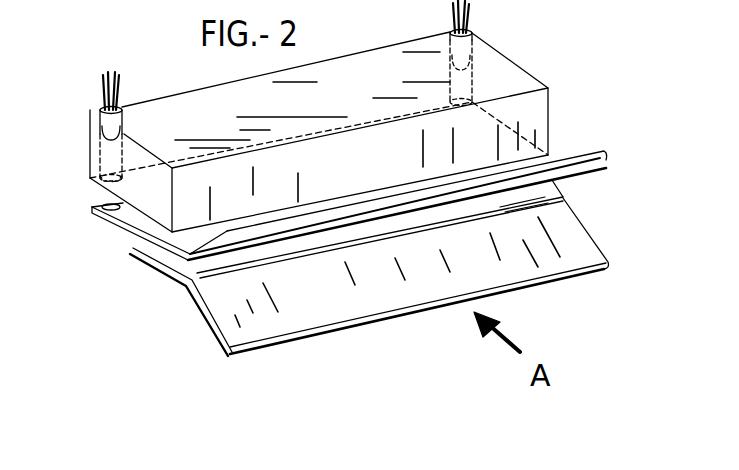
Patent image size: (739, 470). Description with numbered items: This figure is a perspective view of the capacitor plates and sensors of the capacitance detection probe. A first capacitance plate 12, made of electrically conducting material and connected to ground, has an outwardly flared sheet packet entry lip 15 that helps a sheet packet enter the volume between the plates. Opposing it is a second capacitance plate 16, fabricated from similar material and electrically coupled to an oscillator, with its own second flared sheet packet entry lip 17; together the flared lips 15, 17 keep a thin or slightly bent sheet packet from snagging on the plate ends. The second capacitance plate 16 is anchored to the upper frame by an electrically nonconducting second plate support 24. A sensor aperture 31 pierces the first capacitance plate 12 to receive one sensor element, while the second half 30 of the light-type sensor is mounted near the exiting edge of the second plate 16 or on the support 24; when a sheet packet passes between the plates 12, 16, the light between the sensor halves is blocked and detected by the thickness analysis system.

The first capacitance plate 12 is at (158, 262).
The first flared sheet packet entry lip 15 is at (608, 258).
The second capacitance plate 16 is at (130, 236).
The second flared sheet packet entry lip 17 is at (604, 162).
The second plate support 24 is at (552, 92).
The second half of a sensor 30 is at (100, 104).
The sensor aperture 31 is at (103, 185).